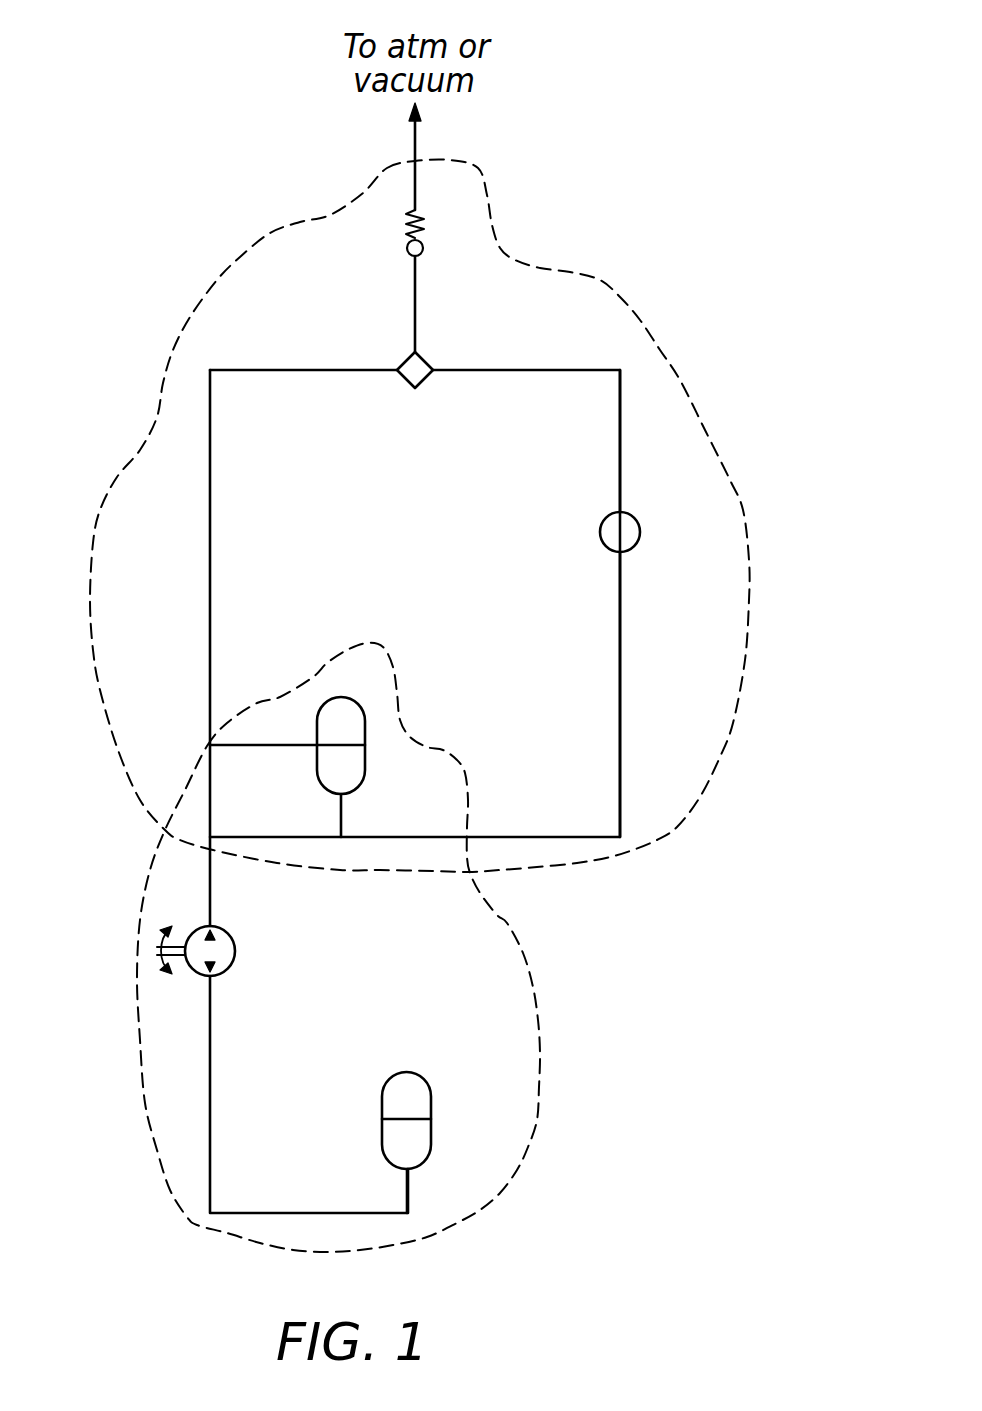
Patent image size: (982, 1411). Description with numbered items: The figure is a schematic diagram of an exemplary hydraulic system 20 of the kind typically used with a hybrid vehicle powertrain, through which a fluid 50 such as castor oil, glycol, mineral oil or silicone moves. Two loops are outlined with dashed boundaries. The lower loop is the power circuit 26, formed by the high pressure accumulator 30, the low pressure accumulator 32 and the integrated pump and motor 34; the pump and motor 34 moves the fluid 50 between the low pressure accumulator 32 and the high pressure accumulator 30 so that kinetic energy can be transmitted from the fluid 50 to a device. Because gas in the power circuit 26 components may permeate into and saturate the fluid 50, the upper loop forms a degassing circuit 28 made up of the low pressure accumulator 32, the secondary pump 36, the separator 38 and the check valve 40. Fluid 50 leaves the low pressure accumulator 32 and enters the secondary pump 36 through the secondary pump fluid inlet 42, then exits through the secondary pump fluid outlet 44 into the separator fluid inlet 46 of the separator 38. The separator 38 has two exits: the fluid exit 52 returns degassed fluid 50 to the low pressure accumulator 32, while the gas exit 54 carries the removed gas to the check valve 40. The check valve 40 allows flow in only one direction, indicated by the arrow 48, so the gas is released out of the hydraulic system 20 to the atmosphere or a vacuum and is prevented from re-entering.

The hydraulic system 20 is at (717, 159).
The power circuit 26 is at (185, 1222).
The degassing circuit 28 is at (620, 300).
The high pressure accumulator 30 is at (412, 1062).
The low pressure accumulator 32 is at (347, 690).
The integrated pump and motor 34 is at (243, 937).
The secondary pump 36 is at (653, 528).
The separator 38 is at (437, 352).
The check valve 40 is at (423, 228).
The secondary pump fluid inlet 42 is at (620, 552).
The secondary pump fluid outlet 44 is at (620, 512).
The separator fluid inlet 46 is at (432, 373).
The arrow 48 is at (407, 250).
The fluid 50 is at (208, 548).
The fluid exit 52 is at (399, 373).
The gas exit 54 is at (398, 350).